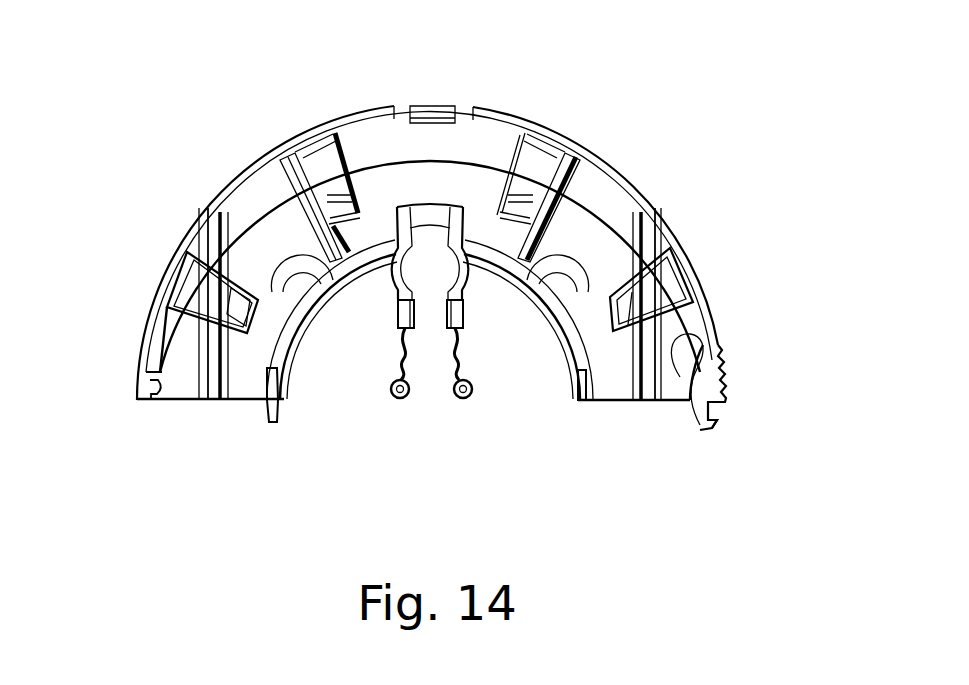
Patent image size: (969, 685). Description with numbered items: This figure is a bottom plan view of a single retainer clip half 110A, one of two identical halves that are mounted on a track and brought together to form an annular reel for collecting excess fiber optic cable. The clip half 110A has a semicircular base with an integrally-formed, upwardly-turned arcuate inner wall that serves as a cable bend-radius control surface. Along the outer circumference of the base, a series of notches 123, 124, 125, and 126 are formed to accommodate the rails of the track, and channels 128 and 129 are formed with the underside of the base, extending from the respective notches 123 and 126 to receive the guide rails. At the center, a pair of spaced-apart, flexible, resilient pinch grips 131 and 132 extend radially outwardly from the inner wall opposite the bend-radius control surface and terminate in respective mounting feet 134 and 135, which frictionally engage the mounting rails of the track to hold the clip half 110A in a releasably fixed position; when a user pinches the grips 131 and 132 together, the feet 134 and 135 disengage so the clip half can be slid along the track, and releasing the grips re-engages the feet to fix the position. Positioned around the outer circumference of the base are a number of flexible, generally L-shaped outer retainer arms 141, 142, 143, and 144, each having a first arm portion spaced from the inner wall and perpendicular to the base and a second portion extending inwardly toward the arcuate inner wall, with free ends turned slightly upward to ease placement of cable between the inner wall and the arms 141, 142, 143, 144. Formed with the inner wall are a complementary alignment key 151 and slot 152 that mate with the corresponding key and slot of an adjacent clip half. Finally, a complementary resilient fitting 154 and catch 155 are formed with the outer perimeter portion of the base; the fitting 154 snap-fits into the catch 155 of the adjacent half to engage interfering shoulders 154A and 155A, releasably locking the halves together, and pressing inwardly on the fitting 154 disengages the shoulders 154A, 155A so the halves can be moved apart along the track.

The retainer clip half 110A is at (752, 171).
The notch 123 is at (203, 222).
The notch 124 is at (396, 106).
The notch 125 is at (456, 108).
The notch 126 is at (648, 218).
The channel 128 is at (216, 372).
The channel 129 is at (650, 372).
The pinch grip 131 is at (464, 398).
The pinch grip 132 is at (398, 398).
The mounting foot 134 is at (462, 316).
The mounting foot 135 is at (400, 315).
The outer retainer arm 141 is at (663, 295).
The outer retainer arm 142 is at (540, 170).
The outer retainer arm 143 is at (320, 160).
The outer retainer arm 144 is at (195, 282).
The alignment key 151 is at (270, 425).
The alignment slot 152 is at (581, 388).
The resilient fitting 154 is at (697, 425).
The interfering shoulder 154A is at (714, 418).
The catch 155 is at (138, 372).
The interfering shoulder 155A is at (158, 403).